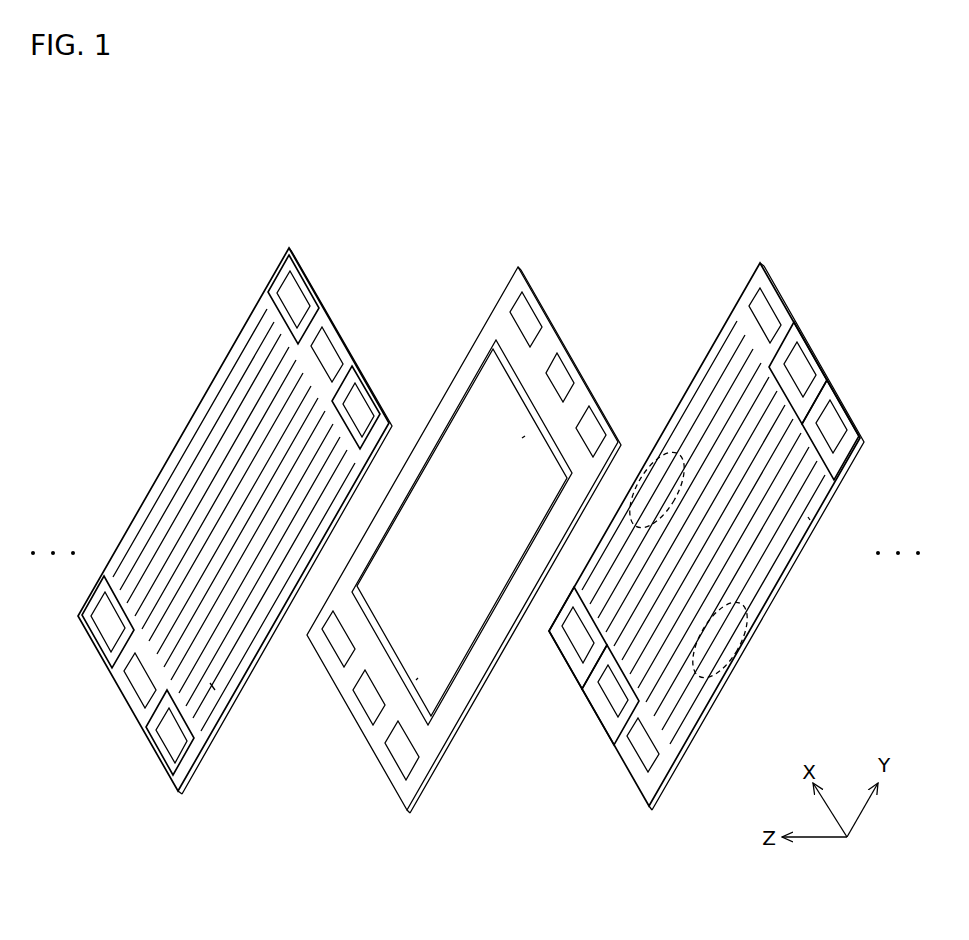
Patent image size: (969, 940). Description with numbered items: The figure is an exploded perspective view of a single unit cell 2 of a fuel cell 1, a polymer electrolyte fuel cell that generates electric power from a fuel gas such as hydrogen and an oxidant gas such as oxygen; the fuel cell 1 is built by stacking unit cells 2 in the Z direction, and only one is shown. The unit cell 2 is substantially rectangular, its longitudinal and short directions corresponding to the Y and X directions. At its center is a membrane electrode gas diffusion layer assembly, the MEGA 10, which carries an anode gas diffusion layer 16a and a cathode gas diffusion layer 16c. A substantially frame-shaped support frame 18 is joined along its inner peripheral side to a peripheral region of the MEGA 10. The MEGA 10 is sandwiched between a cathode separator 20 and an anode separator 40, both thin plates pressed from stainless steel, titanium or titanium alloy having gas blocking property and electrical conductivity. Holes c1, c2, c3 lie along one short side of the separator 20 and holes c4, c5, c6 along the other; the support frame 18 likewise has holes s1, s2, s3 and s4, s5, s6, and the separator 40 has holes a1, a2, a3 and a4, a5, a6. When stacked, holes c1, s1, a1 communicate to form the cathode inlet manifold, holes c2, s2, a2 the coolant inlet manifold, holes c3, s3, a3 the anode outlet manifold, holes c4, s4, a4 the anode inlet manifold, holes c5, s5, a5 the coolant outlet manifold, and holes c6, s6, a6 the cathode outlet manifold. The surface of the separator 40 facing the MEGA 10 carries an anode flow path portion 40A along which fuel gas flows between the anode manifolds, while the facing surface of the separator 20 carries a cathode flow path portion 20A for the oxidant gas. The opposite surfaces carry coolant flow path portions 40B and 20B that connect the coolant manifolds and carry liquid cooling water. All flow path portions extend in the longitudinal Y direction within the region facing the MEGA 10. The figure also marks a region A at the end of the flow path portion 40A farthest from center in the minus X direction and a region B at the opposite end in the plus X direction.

The fuel cell 1 is at (805, 166).
The unit cell 2 is at (704, 220).
The membrane electrode gas diffusion layer assembly (MEGA) 10 is at (378, 650).
The support frame 18 is at (518, 267).
The anode gas diffusion layer 16a is at (522, 438).
The cathode gas diffusion layer 16c is at (418, 678).
The cathode separator 20 is at (140, 728).
The cathode flow path portion 20A is at (215, 690).
The coolant flow path portion 20B is at (150, 540).
The anode separator 40 is at (613, 740).
The anode flow path portion 40A is at (723, 550).
The coolant flow path portion 40B is at (810, 520).
The hole c1 is at (105, 622).
The hole c2 is at (135, 680).
The hole c3 is at (168, 745).
The hole c4 is at (293, 300).
The hole c5 is at (327, 355).
The hole c6 is at (357, 410).
The hole s1 is at (338, 640).
The hole s2 is at (368, 697).
The hole s3 is at (400, 752).
The hole s4 is at (526, 320).
The hole s5 is at (560, 378).
The hole s6 is at (592, 432).
The hole a1 is at (578, 635).
The hole a2 is at (612, 692).
The hole a3 is at (642, 745).
The hole a4 is at (768, 316).
The hole a5 is at (800, 370).
The hole a6 is at (832, 428).
The region A is at (730, 676).
The region B is at (680, 453).